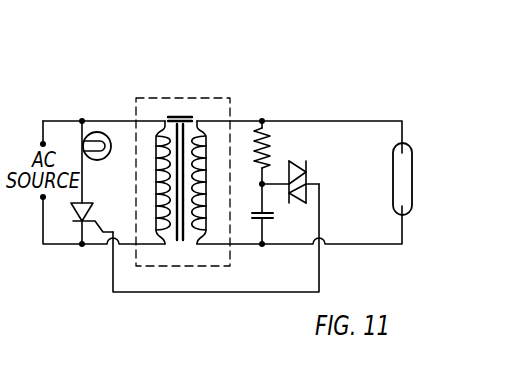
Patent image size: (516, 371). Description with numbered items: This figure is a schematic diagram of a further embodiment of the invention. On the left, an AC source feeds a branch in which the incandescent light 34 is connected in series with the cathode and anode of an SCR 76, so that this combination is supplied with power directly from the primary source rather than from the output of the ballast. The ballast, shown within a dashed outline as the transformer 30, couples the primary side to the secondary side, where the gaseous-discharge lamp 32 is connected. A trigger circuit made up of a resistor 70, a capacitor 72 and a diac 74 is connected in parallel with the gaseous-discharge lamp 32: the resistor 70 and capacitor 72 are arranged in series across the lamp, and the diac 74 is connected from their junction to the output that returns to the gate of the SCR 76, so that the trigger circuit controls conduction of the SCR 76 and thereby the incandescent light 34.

The transformer 30 is at (220, 97).
The gaseous-discharge lamp 32 is at (395, 158).
The incandescent light 34 is at (98, 132).
The resistor 70 is at (262, 133).
The capacitor 72 is at (273, 218).
The diac 74 is at (306, 163).
The SCR 76 is at (77, 222).